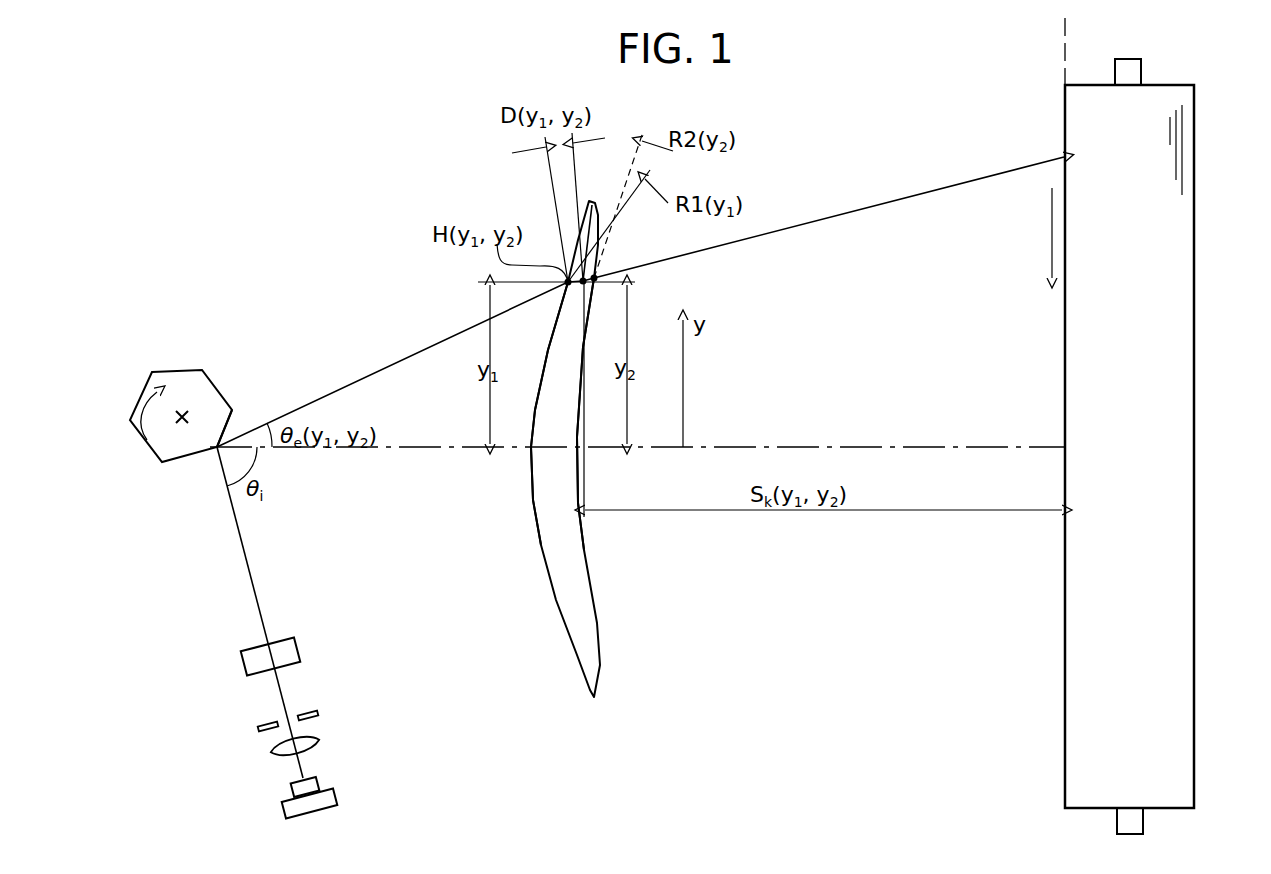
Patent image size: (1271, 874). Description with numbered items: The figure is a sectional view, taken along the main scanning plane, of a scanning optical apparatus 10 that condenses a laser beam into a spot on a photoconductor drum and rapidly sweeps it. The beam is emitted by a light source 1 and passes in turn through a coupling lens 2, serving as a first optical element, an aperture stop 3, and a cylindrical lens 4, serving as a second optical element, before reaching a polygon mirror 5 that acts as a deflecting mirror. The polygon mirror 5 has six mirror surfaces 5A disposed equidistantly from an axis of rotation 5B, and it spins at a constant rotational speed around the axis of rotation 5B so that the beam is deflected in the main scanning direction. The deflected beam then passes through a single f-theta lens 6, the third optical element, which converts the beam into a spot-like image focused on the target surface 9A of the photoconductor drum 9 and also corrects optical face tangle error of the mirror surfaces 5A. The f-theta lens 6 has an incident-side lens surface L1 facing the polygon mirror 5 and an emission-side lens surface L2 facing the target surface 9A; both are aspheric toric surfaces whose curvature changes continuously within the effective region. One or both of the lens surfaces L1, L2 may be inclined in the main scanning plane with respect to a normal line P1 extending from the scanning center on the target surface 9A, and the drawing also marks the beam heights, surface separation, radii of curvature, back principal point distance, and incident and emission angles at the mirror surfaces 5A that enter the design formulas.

The light source 1 is at (336, 796).
The coupling lens 2 is at (320, 741).
The aperture stop 3 is at (318, 713).
The cylindrical lens 4 is at (298, 651).
The polygon mirror 5 is at (195, 372).
The mirror surfaces 5A is at (238, 416).
The axis of rotation 5B is at (182, 424).
The f-theta lens 6 is at (600, 627).
The photoconductor drum 9 is at (1167, 283).
The target surface 9A is at (1064, 45).
The scanning optical apparatus 10 is at (292, 157).
The incident-side lens surface L1 is at (541, 537).
The emission-side lens surface L2 is at (584, 548).
The normal line P1 is at (821, 447).